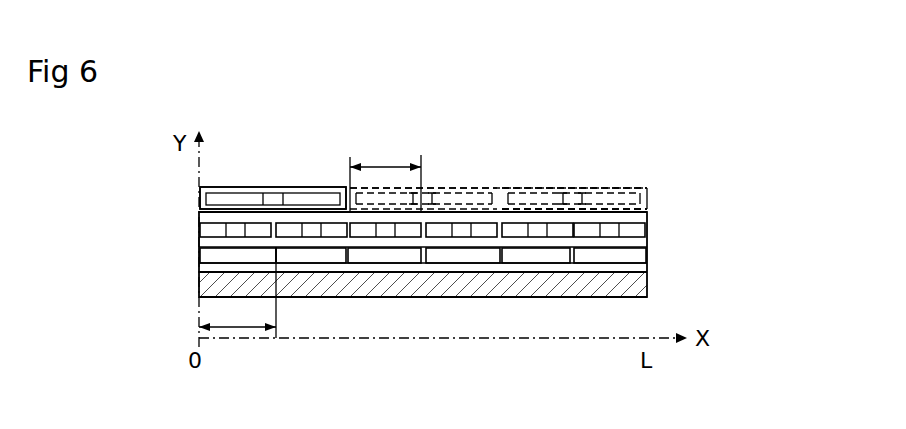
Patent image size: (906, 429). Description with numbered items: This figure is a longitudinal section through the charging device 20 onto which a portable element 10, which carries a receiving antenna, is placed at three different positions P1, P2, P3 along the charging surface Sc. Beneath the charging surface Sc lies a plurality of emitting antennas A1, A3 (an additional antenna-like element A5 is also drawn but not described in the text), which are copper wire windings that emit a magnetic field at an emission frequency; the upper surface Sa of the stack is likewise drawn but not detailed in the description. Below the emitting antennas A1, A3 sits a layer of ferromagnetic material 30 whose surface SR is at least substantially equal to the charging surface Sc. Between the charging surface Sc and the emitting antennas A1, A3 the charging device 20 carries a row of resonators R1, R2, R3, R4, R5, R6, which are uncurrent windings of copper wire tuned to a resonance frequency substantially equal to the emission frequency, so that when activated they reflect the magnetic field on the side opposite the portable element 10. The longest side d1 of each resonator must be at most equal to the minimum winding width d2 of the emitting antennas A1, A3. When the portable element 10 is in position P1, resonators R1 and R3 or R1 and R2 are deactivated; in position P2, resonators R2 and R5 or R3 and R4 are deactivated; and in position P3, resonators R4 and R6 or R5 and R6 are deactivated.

The portable element 10 is at (240, 188).
The charging device 20 is at (205, 280).
The layer of ferromagnetic material 30 is at (637, 283).
The resonator R1 is at (207, 230).
The resonator R2 is at (293, 230).
The resonator R3 is at (367, 230).
The resonator R4 is at (480, 232).
The resonator R5 is at (553, 232).
The resonator R6 is at (630, 230).
The emitting antenna A1 is at (205, 252).
The emitting antenna A3 is at (638, 253).
The area 5 A5 is at (605, 188).
The upper surface Sa is at (630, 222).
The charging surface Sc is at (624, 207).
The surface of the ferromagnetic layer SR is at (620, 297).
The position P1 is at (273, 185).
The position P2 is at (423, 185).
The position P3 is at (574, 185).
The length of longest side of resonator d1 is at (385, 175).
The minimum winding width d2 is at (237, 292).